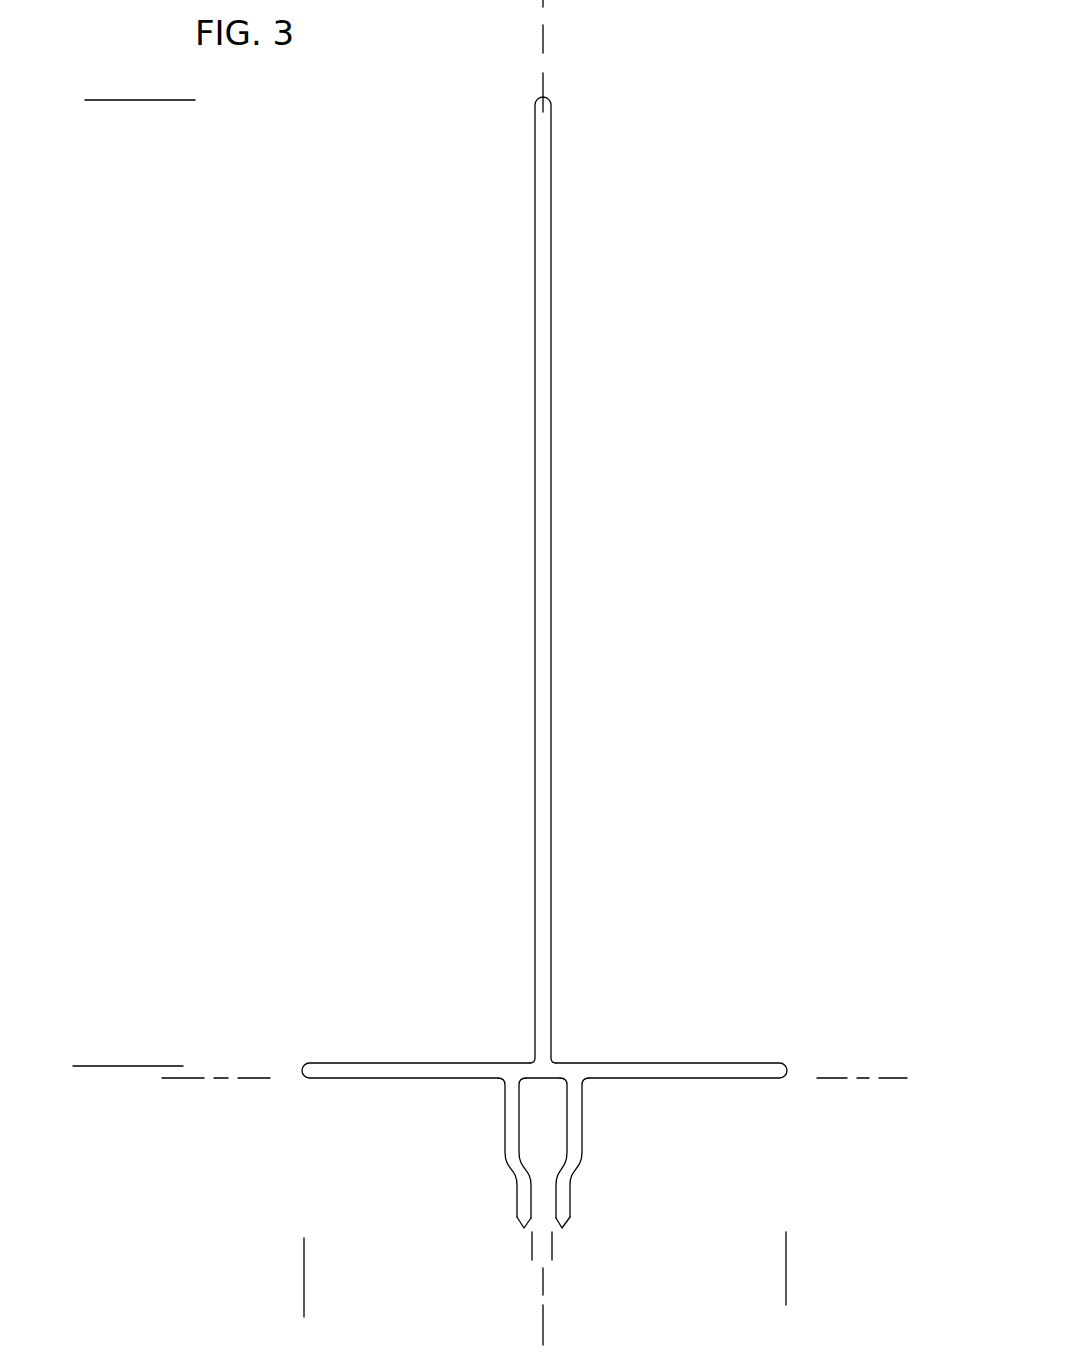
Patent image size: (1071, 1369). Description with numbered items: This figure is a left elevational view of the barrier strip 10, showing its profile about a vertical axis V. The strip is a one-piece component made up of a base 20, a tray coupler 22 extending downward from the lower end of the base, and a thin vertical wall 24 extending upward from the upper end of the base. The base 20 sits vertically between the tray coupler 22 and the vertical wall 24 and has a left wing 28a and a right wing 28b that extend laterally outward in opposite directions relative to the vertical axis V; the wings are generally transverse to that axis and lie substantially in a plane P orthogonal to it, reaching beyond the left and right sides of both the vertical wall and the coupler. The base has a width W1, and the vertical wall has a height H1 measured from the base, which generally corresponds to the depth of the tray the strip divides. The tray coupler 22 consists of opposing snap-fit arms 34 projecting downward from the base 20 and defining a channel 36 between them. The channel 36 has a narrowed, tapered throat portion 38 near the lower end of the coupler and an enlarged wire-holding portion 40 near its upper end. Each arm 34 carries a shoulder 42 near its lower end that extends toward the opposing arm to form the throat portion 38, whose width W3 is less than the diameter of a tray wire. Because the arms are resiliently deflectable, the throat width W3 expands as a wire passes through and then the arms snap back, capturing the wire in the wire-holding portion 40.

The barrier strip 10 is at (698, 157).
The base 20 is at (552, 670).
The tray coupler 22 is at (559, 1160).
The vertical wall 24 is at (551, 604).
The left wing 28a is at (333, 1063).
The right wing 28b is at (653, 1063).
The snap-fit arms 34 is at (505, 1122).
The channel 36 is at (520, 1136).
The throat portion 38 is at (562, 1203).
The wire-holding portion 40 is at (546, 1115).
The shoulder 42 is at (527, 1197).
The height of the vertical wall H1 is at (117, 84).
The plane P is at (187, 1082).
The vertical axis V is at (543, 44).
The width of the base W1 is at (304, 1265).
The width of the throat portion W3 is at (520, 1244).